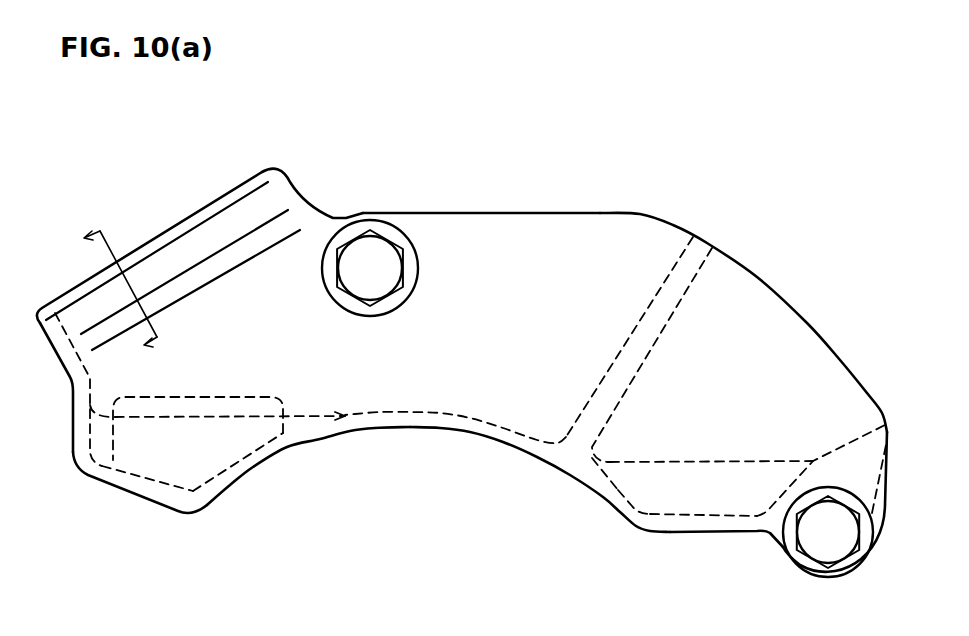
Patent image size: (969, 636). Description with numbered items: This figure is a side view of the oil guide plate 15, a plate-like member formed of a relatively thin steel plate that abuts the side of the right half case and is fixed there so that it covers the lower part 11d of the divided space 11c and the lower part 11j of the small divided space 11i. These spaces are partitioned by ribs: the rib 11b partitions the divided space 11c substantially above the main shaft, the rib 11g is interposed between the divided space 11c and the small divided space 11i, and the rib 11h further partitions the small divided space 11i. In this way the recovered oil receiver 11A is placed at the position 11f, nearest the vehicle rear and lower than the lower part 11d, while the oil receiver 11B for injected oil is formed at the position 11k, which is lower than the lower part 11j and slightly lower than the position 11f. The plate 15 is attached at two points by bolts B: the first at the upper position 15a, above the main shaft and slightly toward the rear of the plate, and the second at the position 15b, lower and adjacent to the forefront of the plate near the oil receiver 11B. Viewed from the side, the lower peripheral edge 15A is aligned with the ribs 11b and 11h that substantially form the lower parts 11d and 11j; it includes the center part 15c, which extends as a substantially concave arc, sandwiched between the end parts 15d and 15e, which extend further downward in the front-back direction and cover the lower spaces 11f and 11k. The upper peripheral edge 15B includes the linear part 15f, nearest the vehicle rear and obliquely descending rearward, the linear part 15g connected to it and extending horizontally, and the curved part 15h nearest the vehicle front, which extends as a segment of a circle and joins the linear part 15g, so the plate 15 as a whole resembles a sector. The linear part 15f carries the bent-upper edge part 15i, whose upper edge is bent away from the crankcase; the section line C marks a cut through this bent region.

The oil guide plate 15 is at (413, 154).
The upper position 15a is at (326, 287).
The position 15b is at (835, 504).
The center part 15c is at (395, 428).
The end part 15d is at (185, 503).
The end part 15e is at (730, 523).
The linear part 15f is at (132, 240).
The linear part 15g is at (340, 216).
The curved part 15h is at (757, 276).
The bent-upper edge part 15i is at (182, 220).
The lower peripheral edge 15A is at (482, 438).
The upper peripheral edge 15B is at (540, 212).
The recovered oil receiver 11A is at (217, 430).
The oil receiver 11B is at (748, 470).
The rib 11b is at (247, 470).
The divided space 11c is at (460, 319).
The lower part 11d is at (140, 452).
The position 11f is at (173, 470).
The rib 11g is at (612, 378).
The rib 11h is at (673, 523).
The small divided space 11i is at (773, 399).
The lower part 11j is at (640, 481).
The position 11k is at (652, 499).
The bolt B is at (378, 272).
The section line C- C is at (107, 300).